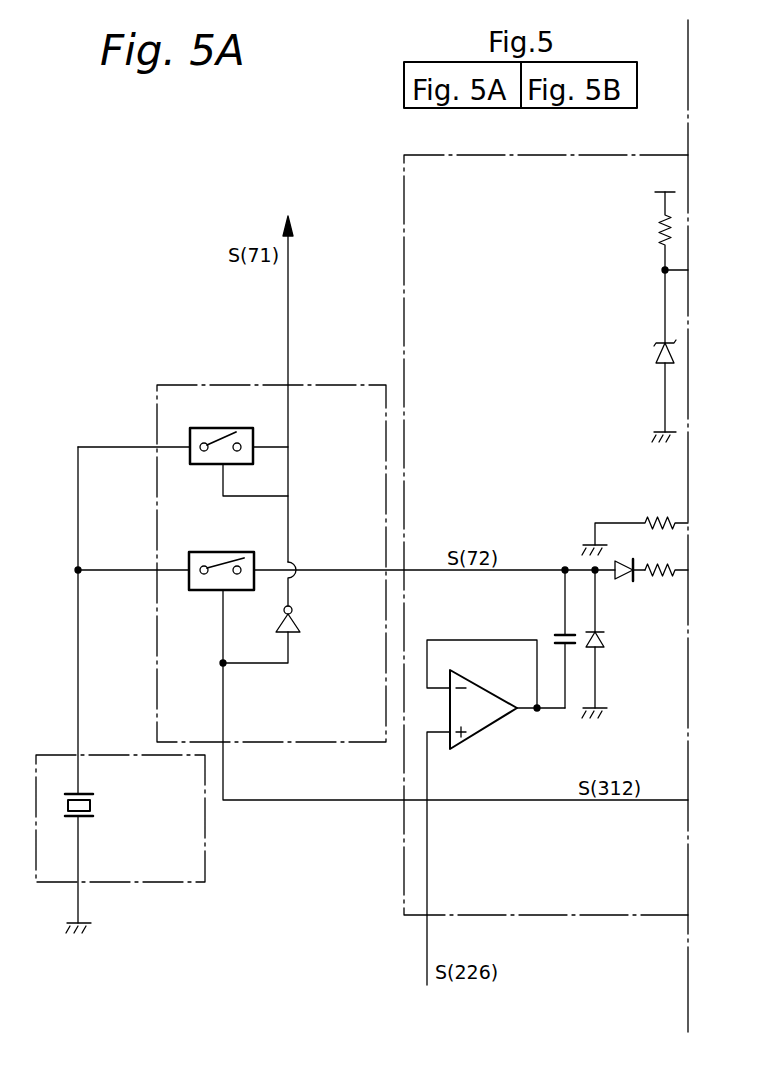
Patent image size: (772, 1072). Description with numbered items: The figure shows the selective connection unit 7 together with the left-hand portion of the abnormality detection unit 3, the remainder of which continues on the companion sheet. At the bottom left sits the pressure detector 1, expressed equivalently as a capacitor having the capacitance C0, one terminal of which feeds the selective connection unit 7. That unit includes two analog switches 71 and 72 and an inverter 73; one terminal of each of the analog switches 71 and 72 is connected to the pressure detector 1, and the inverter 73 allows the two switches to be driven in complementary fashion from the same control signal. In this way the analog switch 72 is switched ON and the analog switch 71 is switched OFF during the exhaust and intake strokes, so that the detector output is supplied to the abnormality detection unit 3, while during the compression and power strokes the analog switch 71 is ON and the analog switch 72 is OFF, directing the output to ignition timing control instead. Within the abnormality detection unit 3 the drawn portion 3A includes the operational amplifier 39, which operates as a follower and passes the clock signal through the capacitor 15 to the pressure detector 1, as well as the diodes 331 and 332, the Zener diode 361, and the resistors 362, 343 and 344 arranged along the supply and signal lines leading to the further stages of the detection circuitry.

The abnormality detection unit 3 is at (631, 153).
The signal processing section 3A is at (551, 306).
The resistor 362 is at (657, 228).
The Zener diode 361 is at (655, 355).
The resistor 343 is at (668, 517).
The resistor 344 is at (660, 562).
The diode 332 is at (629, 581).
The diode 331 is at (605, 645).
The capacitor 15 is at (556, 636).
The operational amplifier 39 is at (485, 731).
The selective connection unit 7 is at (236, 384).
The analog switch 71 is at (200, 465).
The analog switch 72 is at (245, 551).
The inverter 73 is at (277, 621).
The pressure detector 1 is at (205, 858).